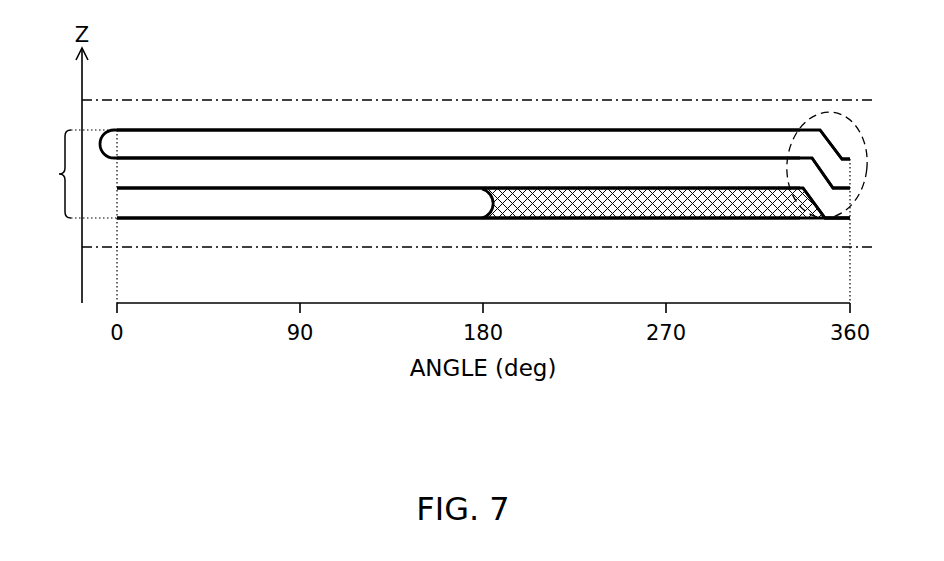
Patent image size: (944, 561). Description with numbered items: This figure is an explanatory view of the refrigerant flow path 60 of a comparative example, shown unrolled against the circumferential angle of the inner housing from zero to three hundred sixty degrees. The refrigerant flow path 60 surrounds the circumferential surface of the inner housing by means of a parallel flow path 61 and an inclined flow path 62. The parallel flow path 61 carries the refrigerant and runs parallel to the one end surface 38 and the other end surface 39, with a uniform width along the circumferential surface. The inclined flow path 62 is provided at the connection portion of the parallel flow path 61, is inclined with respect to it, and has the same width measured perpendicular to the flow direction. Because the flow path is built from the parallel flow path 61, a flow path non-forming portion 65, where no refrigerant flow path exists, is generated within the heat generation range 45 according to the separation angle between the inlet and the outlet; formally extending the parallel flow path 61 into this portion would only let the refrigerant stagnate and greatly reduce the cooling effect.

The one end surface 38 is at (80, 100).
The other end surface 39 is at (80, 247).
The heat generation range 45 is at (70, 174).
The refrigerant flow path 60 is at (486, 120).
The parallel flow path 61 is at (290, 201).
The inclined flow path 62 is at (831, 112).
The flow path non-forming portion 65 is at (604, 208).